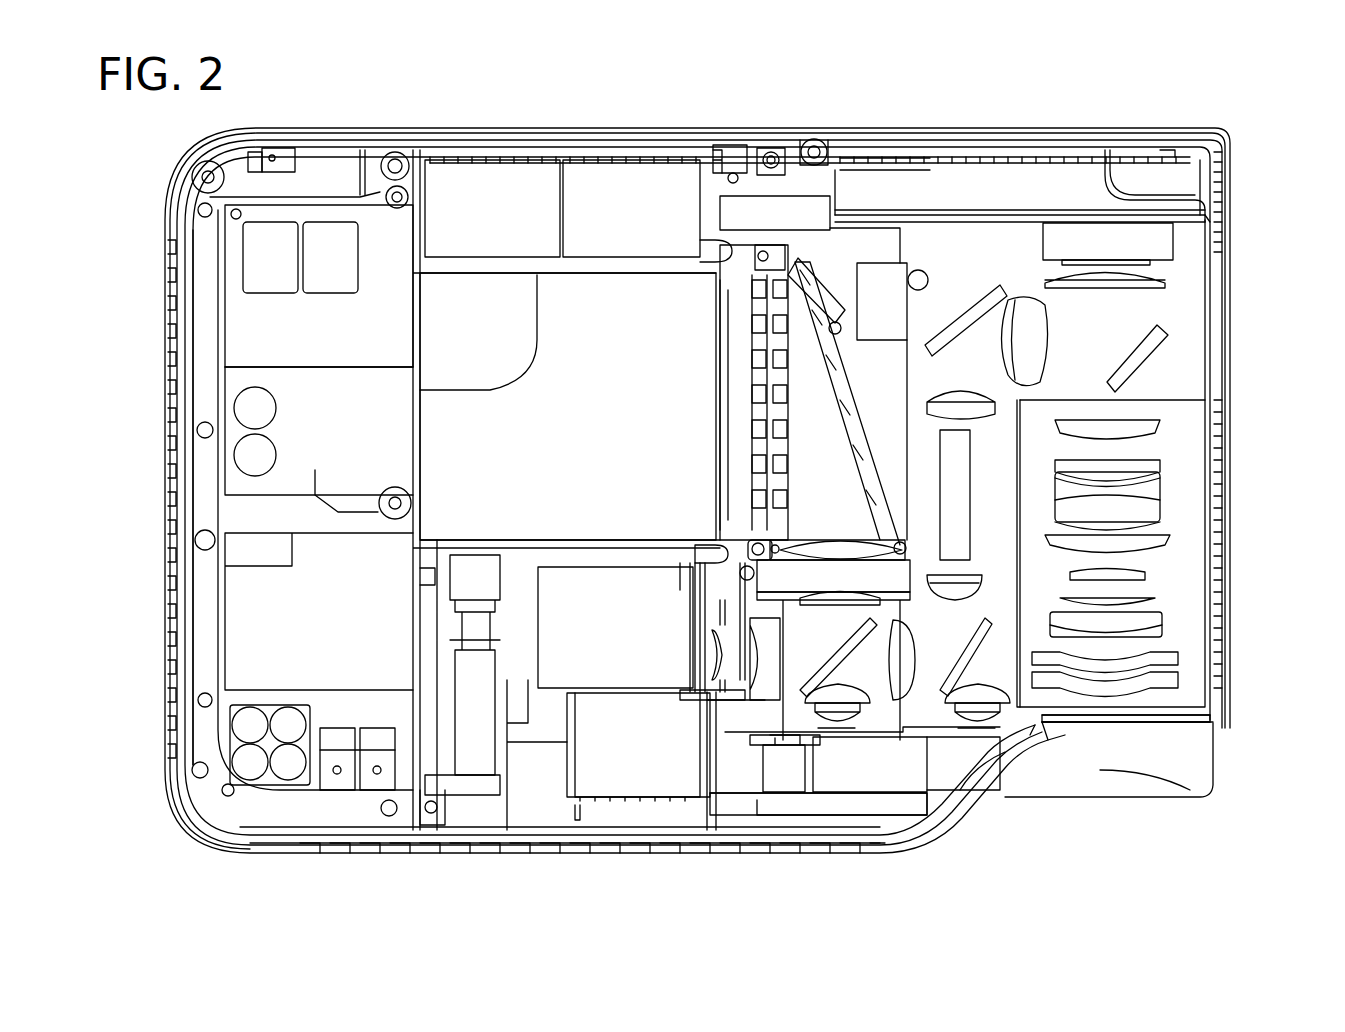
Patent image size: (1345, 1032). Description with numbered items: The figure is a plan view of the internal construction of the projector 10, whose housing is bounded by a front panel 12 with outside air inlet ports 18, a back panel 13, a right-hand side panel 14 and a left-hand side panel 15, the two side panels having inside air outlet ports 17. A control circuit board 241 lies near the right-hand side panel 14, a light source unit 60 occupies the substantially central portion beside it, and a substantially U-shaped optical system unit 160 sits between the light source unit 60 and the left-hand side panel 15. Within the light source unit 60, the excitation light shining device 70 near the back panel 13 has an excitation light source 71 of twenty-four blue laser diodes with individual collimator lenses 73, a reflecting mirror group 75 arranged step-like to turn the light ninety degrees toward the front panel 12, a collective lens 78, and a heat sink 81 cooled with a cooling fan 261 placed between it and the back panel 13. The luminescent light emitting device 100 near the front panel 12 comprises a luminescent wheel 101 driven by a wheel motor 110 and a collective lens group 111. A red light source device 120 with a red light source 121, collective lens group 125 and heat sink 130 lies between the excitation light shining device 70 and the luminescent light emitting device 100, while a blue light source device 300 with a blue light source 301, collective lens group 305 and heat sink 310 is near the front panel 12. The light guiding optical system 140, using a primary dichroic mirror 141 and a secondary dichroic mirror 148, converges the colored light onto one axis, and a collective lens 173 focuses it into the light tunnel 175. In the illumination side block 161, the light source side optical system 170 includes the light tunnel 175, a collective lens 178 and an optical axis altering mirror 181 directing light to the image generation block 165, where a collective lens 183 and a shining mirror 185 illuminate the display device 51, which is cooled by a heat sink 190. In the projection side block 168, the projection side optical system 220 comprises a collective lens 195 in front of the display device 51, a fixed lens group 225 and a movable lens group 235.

The projector 10 is at (1240, 128).
The front panel 12 is at (340, 856).
The back panel 13 is at (556, 136).
The right-hand side panel 14 is at (176, 362).
The left-hand side panel 15 is at (1226, 660).
The inside air outlet ports 17 is at (182, 395).
The outside air inlet ports 18 is at (510, 130).
The display device 51 is at (1160, 258).
The light source unit 60 is at (690, 458).
The excitation light shining device 70 is at (740, 283).
The excitation light source 71 is at (765, 387).
The collimator lenses 73 is at (765, 352).
The reflecting mirror group 75 is at (832, 418).
The collective lens 78 is at (823, 545).
The heat sink 81 is at (603, 365).
The luminescent light emitting device 100 is at (782, 797).
The luminescent wheel 101 is at (688, 705).
The wheel motor 110 is at (750, 737).
The collective lens group 111 is at (868, 722).
The red light source device 120 is at (612, 772).
The red light source 121 is at (700, 640).
The collective lens group 125 is at (718, 625).
The heat sink 130 is at (578, 637).
The light guiding optical system 140 is at (1090, 727).
The primary dichroic mirror 141 is at (812, 690).
The secondary dichroic mirror 148 is at (930, 690).
The optical system unit 160 is at (1158, 724).
The illumination side block 161 is at (1032, 230).
The image generation block 165 is at (1162, 305).
The projection side block 168 is at (1180, 478).
The light source side optical system 170 is at (978, 287).
The collective lens 173 is at (960, 545).
The light tunnel 175 is at (1040, 547).
The collective lens 178 is at (1062, 394).
The optical axis altering mirror 181 is at (988, 367).
The collective lens 183 is at (1037, 322).
The shining mirror 185 is at (1142, 356).
The heat sink 190 is at (1070, 178).
The collective lens 195 is at (1152, 275).
The projection side optical system 220 is at (1180, 510).
The fixed lens group 225 is at (1210, 797).
The movable lens group 235 is at (1180, 452).
The control circuit board 241 is at (292, 583).
The cooling fan 261 is at (452, 182).
The blue light source device 300 is at (957, 760).
The blue light source 301 is at (1020, 765).
The collective lens group 305 is at (975, 690).
The heat sink 310 is at (845, 765).